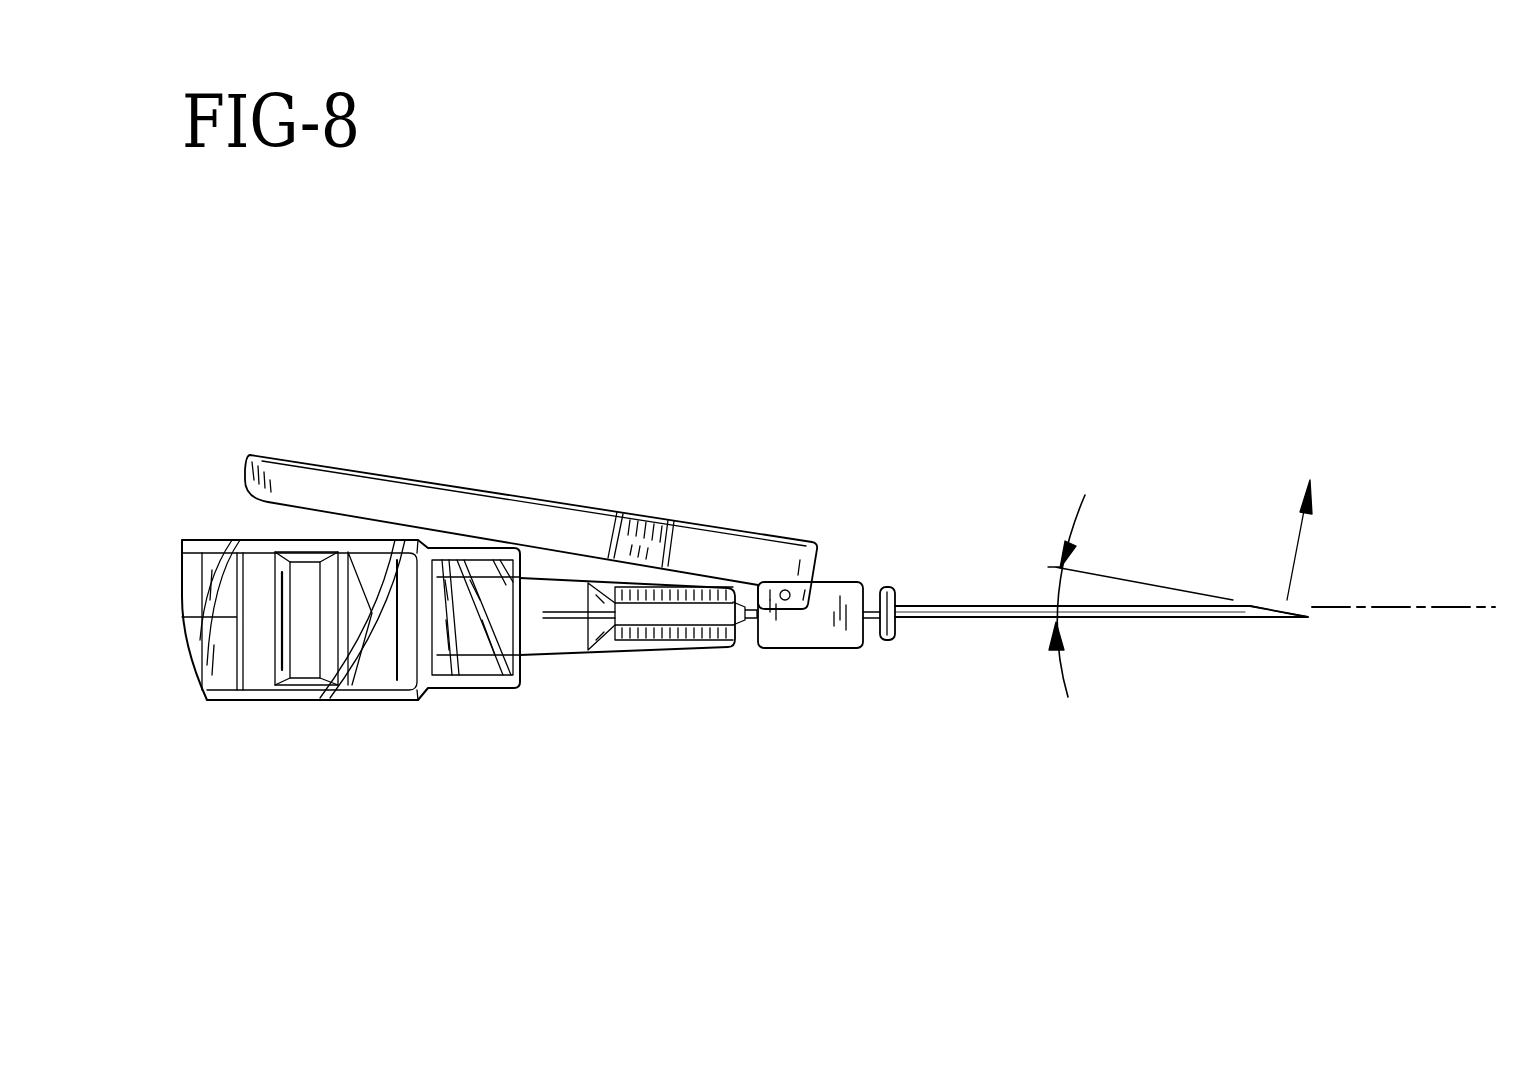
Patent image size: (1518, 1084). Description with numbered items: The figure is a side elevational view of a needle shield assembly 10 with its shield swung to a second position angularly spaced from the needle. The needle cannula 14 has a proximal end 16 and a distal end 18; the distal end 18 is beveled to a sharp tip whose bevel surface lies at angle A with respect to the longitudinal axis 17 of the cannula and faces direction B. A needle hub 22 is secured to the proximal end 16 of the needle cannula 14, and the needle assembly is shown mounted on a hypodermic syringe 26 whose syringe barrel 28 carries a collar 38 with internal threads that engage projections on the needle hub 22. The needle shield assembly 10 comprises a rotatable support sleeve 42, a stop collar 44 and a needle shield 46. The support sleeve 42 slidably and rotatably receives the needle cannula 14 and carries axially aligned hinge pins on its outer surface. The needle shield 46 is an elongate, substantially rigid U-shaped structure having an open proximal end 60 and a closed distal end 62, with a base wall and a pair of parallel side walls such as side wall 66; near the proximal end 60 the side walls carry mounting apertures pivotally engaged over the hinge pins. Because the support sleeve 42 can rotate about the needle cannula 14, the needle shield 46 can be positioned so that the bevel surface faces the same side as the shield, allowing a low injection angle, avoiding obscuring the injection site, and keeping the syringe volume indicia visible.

The needle shield assembly 10 is at (738, 488).
The needle cannula 14 is at (1118, 608).
The proximal end 16 is at (918, 618).
The longitudinal axis 17 is at (1433, 608).
The distal end 18 is at (1247, 613).
The needle hub 22 is at (548, 633).
The hypodermic syringe 26 is at (392, 700).
The syringe barrel 28 is at (295, 702).
The collar 38 is at (518, 690).
The support sleeve 42 is at (824, 664).
The stop collar 44 is at (897, 672).
The needle shield 46 is at (556, 498).
The open proximal end 60 is at (815, 578).
The closed distal end 62 is at (243, 467).
The side wall 66 is at (380, 498).
The angle A is at (1050, 562).
The direction B is at (1305, 519).